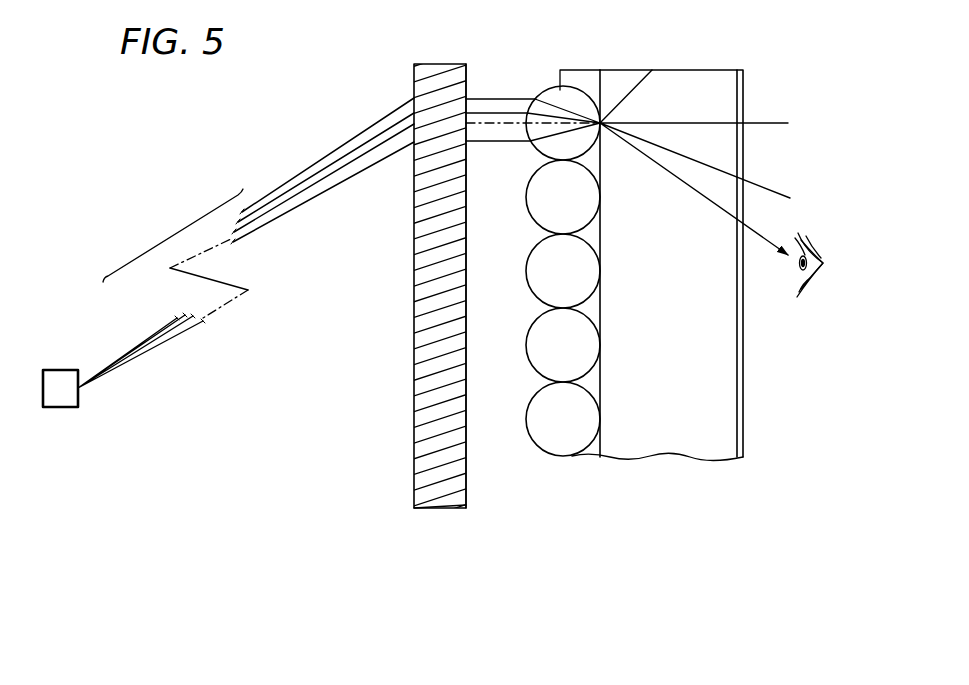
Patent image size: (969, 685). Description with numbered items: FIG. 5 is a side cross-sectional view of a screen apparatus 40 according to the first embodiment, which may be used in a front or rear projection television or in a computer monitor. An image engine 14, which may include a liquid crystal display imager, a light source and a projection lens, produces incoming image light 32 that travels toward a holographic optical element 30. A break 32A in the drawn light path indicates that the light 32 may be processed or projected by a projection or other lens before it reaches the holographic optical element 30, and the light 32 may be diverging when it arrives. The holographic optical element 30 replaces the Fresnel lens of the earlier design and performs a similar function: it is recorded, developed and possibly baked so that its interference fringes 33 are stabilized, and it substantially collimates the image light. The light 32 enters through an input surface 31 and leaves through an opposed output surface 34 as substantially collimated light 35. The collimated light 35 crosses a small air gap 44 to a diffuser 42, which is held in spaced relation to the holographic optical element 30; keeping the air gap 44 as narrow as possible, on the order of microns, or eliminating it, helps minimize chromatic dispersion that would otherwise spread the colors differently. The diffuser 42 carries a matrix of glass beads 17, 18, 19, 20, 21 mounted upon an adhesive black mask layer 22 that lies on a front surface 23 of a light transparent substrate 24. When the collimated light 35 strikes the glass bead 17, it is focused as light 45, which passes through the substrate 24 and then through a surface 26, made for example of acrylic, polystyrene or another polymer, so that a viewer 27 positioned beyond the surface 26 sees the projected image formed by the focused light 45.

The image engine 14 is at (62, 398).
The glass bead 17 is at (537, 150).
The glass bead 18 is at (531, 217).
The glass bead 19 is at (531, 290).
The glass bead 20 is at (532, 366).
The glass bead 21 is at (535, 446).
The adhesive black mask layer 22 is at (558, 70).
The front surface 23 is at (592, 448).
The substrate 24 is at (705, 82).
The surface 26 is at (743, 389).
The viewer 27 is at (800, 231).
The holographic optical element 30 is at (406, 285).
The input surface 31 is at (413, 442).
The incoming image light 32 is at (336, 186).
The break in the light path 32A is at (172, 234).
The interference fringes 33 is at (433, 510).
The output surface 34 is at (466, 478).
The collimated light 35 is at (499, 140).
The screen apparatus 40 is at (490, 37).
The diffuser 42 is at (664, 460).
The air gap 44 is at (493, 540).
The focused light 45 is at (577, 118).